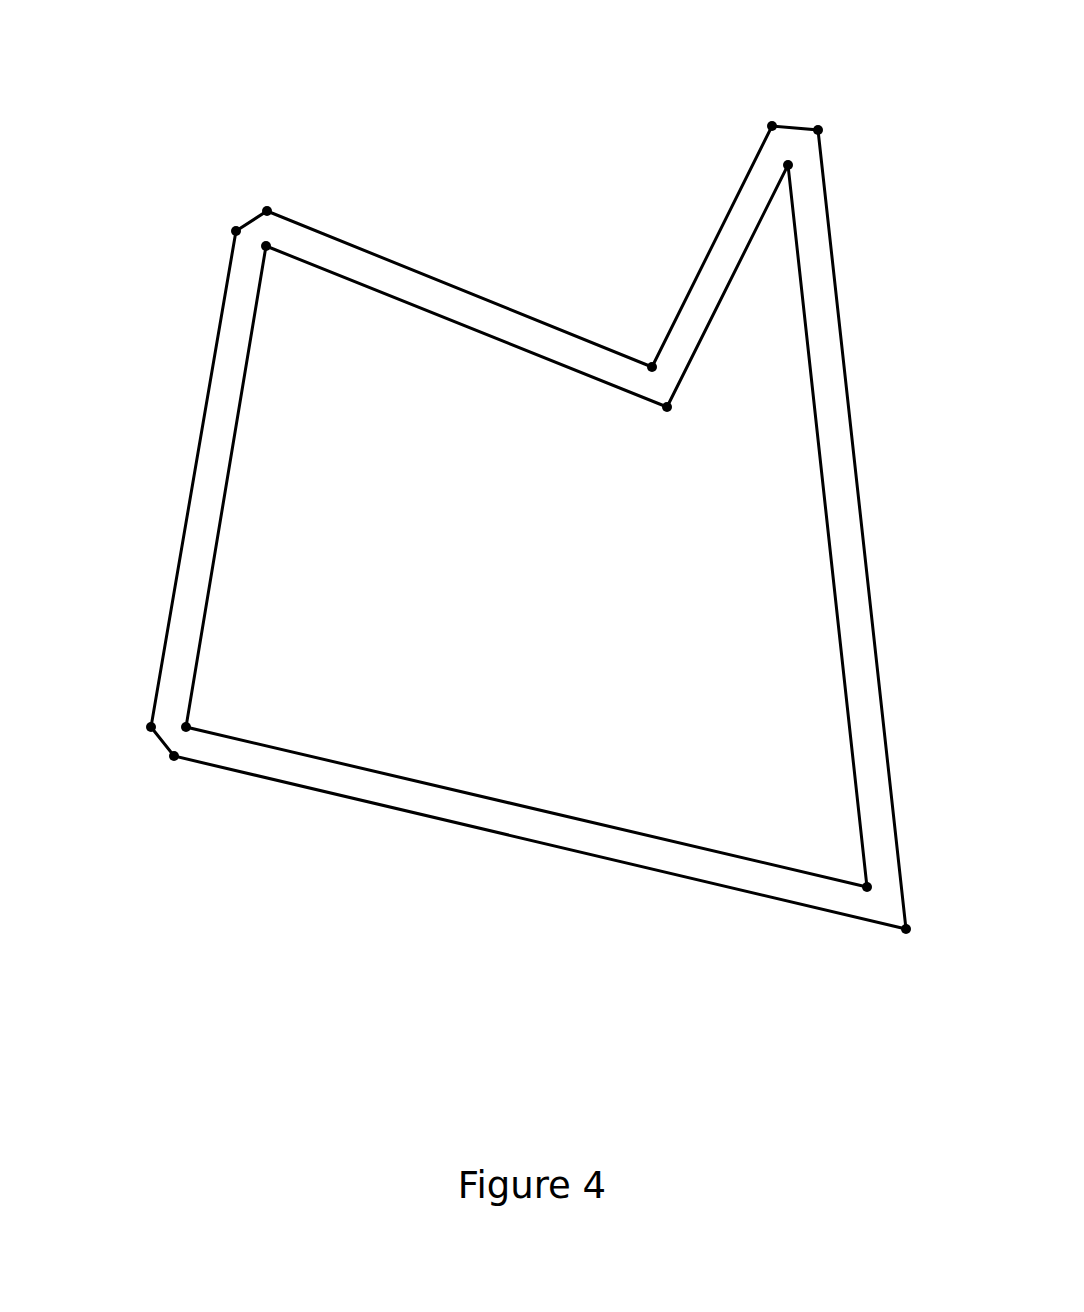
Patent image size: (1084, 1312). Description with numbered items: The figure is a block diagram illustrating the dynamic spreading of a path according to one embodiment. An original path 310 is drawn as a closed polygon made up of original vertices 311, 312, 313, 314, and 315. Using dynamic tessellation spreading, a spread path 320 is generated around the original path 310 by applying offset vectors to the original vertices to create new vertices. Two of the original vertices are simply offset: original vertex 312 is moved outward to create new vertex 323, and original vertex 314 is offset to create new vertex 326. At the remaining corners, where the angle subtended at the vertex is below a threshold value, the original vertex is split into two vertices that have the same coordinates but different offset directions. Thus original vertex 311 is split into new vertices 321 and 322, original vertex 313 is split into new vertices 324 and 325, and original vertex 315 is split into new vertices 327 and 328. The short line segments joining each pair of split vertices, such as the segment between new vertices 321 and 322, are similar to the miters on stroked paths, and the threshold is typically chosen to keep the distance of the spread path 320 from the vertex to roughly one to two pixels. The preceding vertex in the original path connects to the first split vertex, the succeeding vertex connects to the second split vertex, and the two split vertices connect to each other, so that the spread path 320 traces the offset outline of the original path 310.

The original path 310 is at (605, 386).
The original vertex 311 is at (276, 258).
The original vertex 312 is at (652, 417).
The original vertex 313 is at (777, 207).
The original vertex 314 is at (852, 867).
The original vertex 315 is at (203, 718).
The spread path 320 is at (595, 860).
The new vertex 321 is at (233, 222).
The new vertex 322 is at (266, 199).
The new vertex 323 is at (648, 354).
The new vertex 324 is at (771, 114).
The new vertex 325 is at (819, 118).
The new vertex 326 is at (904, 944).
The new vertex 327 is at (173, 770).
The new vertex 328 is at (136, 727).